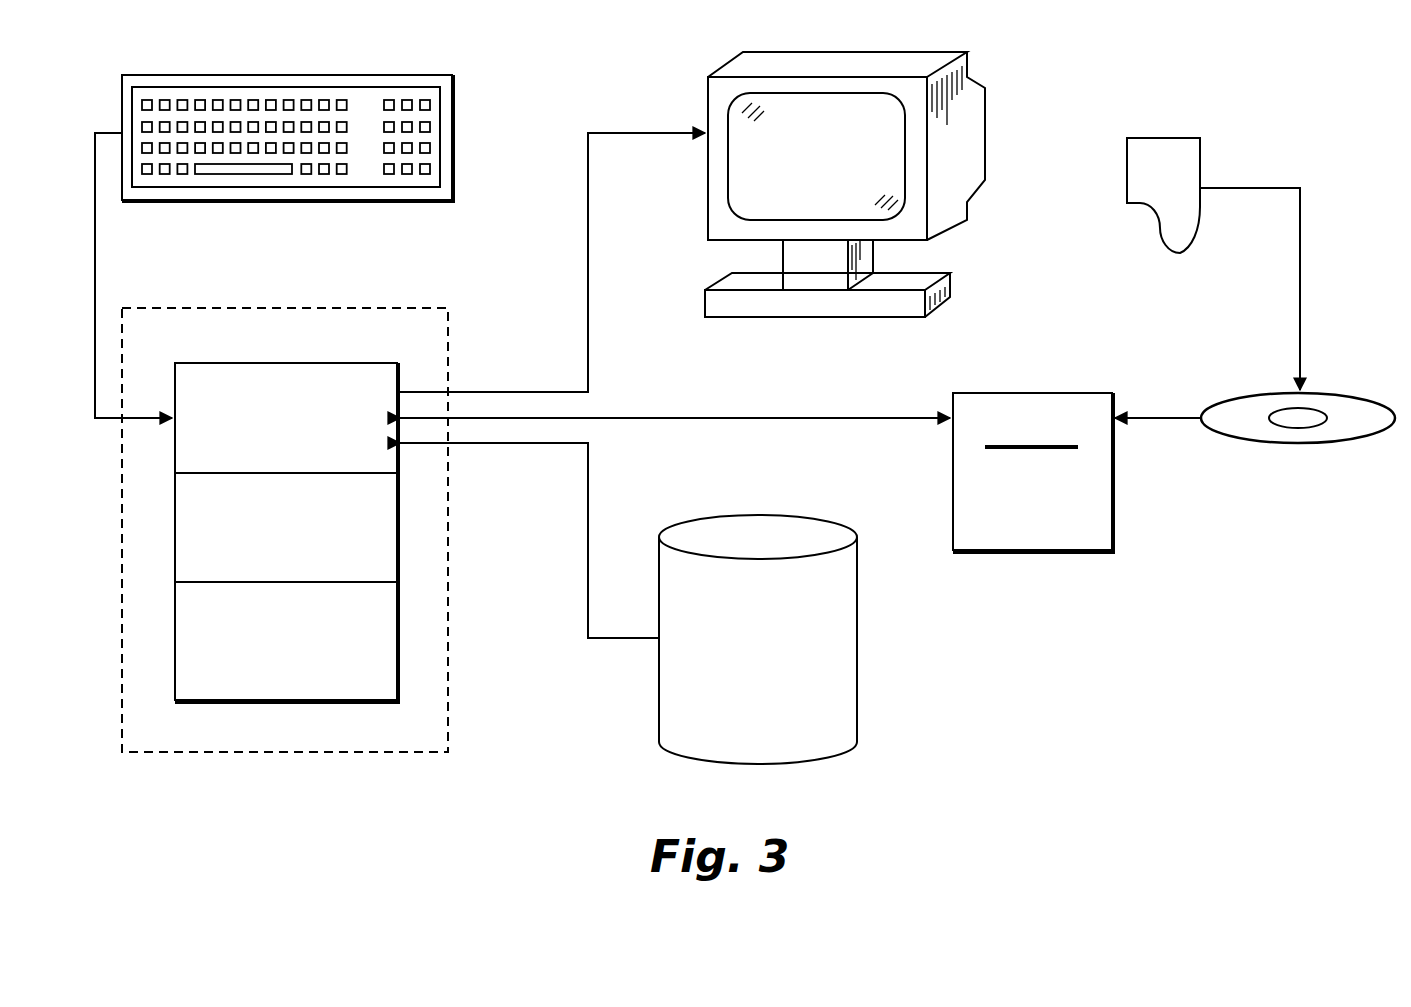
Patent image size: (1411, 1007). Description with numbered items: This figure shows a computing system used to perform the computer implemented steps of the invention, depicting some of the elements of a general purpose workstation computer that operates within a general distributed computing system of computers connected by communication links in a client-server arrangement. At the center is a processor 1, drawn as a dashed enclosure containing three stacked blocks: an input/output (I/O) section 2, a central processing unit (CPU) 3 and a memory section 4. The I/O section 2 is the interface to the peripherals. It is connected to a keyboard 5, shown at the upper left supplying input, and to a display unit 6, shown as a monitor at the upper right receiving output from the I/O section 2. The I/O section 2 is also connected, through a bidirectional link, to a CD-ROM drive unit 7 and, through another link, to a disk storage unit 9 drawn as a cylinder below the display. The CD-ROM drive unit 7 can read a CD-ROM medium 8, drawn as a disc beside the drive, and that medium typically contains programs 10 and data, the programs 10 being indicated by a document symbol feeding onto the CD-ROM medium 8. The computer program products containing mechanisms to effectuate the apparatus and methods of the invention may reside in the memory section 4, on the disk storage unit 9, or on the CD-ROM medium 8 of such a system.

The processor 1 is at (400, 308).
The input/output (I/O) section 2 is at (263, 363).
The central processing unit (CPU) 3 is at (399, 543).
The memory section 4 is at (399, 682).
The keyboard 5 is at (430, 78).
The display unit 6 is at (913, 60).
The CD-ROM drive unit 7 is at (983, 393).
The CD-ROM medium 8 is at (1273, 398).
The disk storage unit 9 is at (858, 612).
The programs 10 is at (1143, 150).